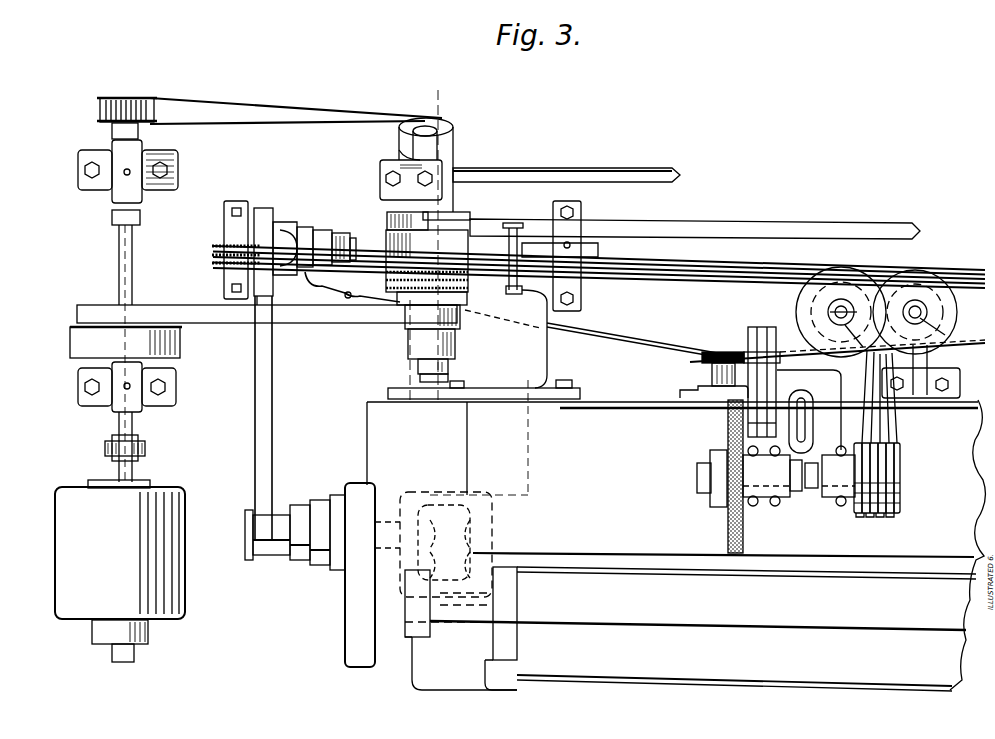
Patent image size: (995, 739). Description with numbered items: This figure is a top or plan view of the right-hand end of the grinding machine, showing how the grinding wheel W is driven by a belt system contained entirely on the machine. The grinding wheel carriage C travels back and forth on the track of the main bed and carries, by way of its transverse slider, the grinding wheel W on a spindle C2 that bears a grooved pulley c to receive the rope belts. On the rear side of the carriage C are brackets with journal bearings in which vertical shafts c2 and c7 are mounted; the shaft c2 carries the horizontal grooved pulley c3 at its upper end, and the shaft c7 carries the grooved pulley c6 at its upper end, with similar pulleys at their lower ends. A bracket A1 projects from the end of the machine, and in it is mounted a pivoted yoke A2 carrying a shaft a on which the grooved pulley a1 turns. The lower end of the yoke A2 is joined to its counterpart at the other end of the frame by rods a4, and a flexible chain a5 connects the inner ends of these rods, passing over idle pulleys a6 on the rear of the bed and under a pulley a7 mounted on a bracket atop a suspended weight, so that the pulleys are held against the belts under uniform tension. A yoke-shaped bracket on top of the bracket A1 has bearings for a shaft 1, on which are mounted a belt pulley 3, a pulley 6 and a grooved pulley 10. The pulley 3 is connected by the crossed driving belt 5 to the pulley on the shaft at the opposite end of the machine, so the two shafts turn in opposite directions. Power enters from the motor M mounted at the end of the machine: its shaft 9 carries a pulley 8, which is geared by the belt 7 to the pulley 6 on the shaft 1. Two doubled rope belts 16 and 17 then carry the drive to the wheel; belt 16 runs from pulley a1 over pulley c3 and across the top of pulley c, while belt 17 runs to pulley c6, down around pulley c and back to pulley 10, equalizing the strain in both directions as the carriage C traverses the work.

The shaft 1 is at (452, 371).
The belt pulley 3 is at (465, 219).
The driving belt 5 is at (752, 227).
The pulley 6 is at (456, 332).
The belt 7 is at (267, 304).
The pulley 8 is at (178, 337).
The shaft 9 is at (119, 252).
The grooved pulley 10 is at (352, 287).
The rope belt 16 is at (903, 430).
The rope belt 17 is at (646, 283).
The shaft a is at (262, 294).
The grooved pulley a1 is at (215, 246).
The pivoted yoke A2 is at (262, 224).
The rods a4 is at (643, 338).
The flexible chain a5 is at (722, 342).
The idle pulleys a6 is at (792, 388).
The pulley a7 is at (837, 344).
The bracket A1 is at (566, 162).
The grooved pulley c is at (901, 478).
The vertical shaft c2 is at (832, 310).
The grooved pulley c3 is at (800, 319).
The grooved pulley c6 is at (922, 280).
The vertical shaft c7 is at (927, 308).
The grinding wheel carriage C is at (615, 535).
The spindle C2 is at (792, 498).
The motor M is at (120, 571).
The grinding wheel W is at (728, 529).